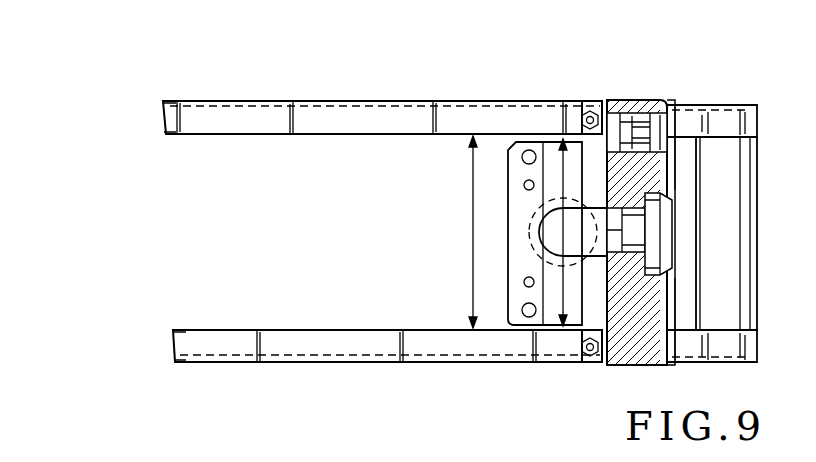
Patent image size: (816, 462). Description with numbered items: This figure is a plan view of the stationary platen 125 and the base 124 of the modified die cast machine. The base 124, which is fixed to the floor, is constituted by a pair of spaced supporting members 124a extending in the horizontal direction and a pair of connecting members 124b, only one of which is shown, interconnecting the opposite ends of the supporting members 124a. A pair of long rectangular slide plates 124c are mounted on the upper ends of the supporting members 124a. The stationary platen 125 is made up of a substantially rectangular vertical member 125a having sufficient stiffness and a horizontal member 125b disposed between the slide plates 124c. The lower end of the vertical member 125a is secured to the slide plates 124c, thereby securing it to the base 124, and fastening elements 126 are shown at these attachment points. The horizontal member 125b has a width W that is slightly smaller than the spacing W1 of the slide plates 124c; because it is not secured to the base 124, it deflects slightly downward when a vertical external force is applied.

The base 124 is at (352, 98).
The supporting members 124a is at (403, 100).
The connecting members 124b is at (735, 172).
The slide plates 124c is at (250, 128).
The stationary platen 125 is at (667, 98).
The vertical member 125a is at (669, 160).
The horizontal member 125b is at (508, 318).
The nuts 126 is at (590, 109).